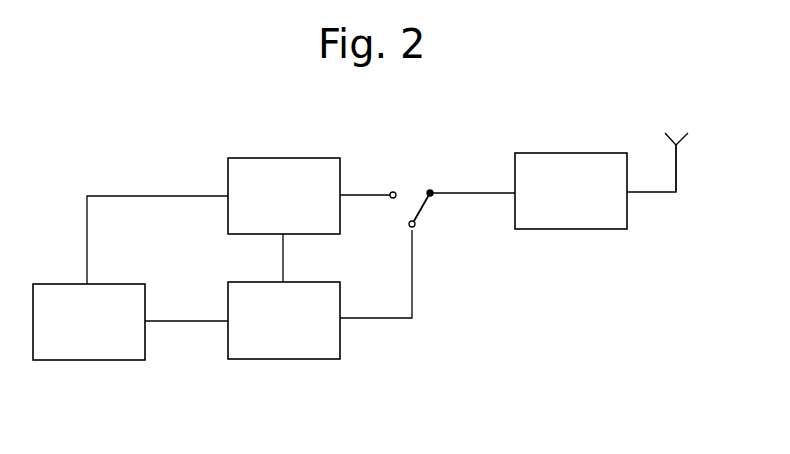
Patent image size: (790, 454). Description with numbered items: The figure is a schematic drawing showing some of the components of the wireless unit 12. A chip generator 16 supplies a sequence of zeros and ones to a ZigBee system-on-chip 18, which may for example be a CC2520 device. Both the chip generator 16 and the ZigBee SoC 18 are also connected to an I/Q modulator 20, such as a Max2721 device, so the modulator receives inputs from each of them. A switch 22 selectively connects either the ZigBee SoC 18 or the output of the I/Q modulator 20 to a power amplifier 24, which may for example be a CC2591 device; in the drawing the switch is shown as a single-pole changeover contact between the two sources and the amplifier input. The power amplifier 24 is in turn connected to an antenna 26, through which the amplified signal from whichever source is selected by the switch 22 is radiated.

The wireless unit 12 is at (140, 143).
The chip generator 16 is at (90, 340).
The ZigBee system-on-chip 18 is at (283, 173).
The I/Q modulator 20 is at (287, 330).
The switch 22 is at (412, 180).
The power amplifier 24 is at (566, 208).
The antenna 26 is at (683, 160).